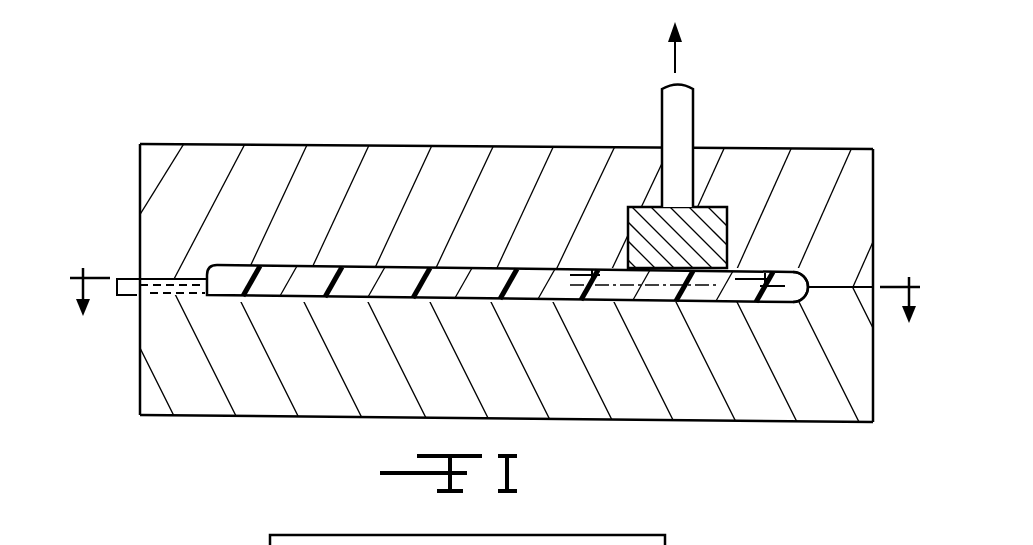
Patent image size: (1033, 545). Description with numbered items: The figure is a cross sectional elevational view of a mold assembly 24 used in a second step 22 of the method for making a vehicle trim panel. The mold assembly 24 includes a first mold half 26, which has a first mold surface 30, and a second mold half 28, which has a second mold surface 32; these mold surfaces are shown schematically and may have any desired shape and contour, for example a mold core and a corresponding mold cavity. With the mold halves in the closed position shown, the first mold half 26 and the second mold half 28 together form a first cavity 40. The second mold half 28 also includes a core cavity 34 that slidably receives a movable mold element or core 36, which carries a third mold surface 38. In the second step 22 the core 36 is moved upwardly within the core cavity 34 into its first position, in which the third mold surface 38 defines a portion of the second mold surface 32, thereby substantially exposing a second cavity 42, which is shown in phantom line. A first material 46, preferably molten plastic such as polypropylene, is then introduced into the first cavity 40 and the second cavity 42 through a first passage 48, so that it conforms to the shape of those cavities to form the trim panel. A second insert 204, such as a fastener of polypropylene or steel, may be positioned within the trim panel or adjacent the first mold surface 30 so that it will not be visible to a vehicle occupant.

The second step 22 is at (180, 70).
The mold assembly 24 is at (363, 136).
The first mold half 26 is at (243, 402).
The second mold half 28 is at (184, 163).
The second insert 204 is at (514, 354).
The first mold surface 30 is at (452, 299).
The second mold surface 32 is at (288, 266).
The core cavity 34 is at (722, 231).
The movable core 36 is at (717, 205).
The third mold surface 38 is at (640, 270).
The first cavity 40 is at (513, 300).
The second cavity 42 is at (679, 290).
The first material 46 is at (783, 306).
The first passage 48 is at (130, 297).